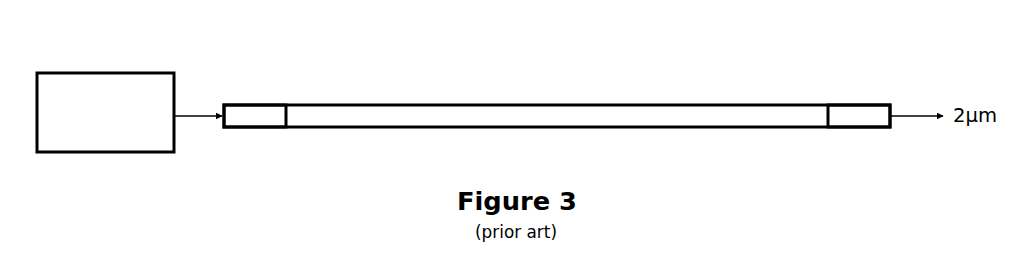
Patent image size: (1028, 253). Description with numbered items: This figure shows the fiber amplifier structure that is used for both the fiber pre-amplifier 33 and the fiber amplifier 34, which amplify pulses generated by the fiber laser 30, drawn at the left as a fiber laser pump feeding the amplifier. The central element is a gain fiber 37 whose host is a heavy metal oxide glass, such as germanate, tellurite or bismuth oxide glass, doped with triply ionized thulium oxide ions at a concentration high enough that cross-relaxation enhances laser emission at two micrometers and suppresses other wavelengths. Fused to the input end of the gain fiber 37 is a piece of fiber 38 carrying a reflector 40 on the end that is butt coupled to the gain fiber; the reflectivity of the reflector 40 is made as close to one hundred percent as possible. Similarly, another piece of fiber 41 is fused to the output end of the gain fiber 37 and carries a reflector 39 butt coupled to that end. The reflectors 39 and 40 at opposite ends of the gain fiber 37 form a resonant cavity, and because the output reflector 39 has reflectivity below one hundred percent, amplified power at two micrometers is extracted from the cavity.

The fiber laser 30 is at (80, 70).
The fiber pre-amplifier 33 is at (557, 80).
The fiber amplifier 34 is at (557, 116).
The gain fiber 37 is at (557, 80).
The piece of fiber 38 is at (256, 100).
The reflector 39 is at (828, 132).
The reflector 40 is at (286, 132).
The piece of fiber 41 is at (858, 101).